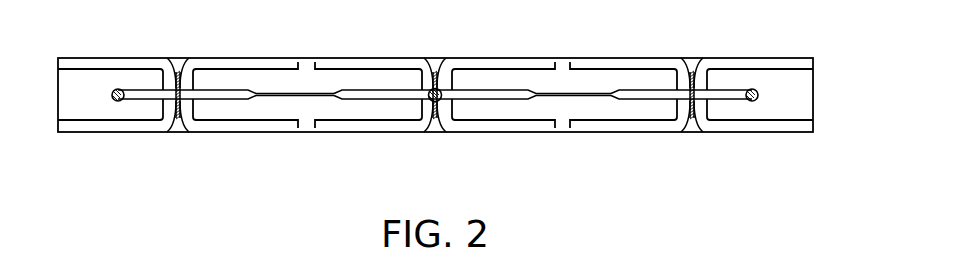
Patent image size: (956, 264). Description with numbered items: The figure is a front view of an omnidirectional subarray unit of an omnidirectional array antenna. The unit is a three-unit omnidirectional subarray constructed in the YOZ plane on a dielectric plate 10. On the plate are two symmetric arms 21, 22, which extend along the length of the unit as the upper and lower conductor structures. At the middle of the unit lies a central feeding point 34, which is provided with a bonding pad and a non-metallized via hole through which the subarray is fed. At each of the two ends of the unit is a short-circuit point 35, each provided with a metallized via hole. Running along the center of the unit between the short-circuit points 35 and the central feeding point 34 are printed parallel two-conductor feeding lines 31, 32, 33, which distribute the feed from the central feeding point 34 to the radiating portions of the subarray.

The dielectric plate 10 is at (692, 58).
The symmetric arm 21 is at (508, 63).
The symmetric arm 22 is at (357, 127).
The parallel two-conductor feeding line 31 is at (383, 92).
The parallel two-conductor feeding line 32 is at (563, 97).
The parallel two-conductor feeding line 33 is at (221, 92).
The central feeding point 34 is at (436, 101).
The short-circuit point 35 is at (119, 101).